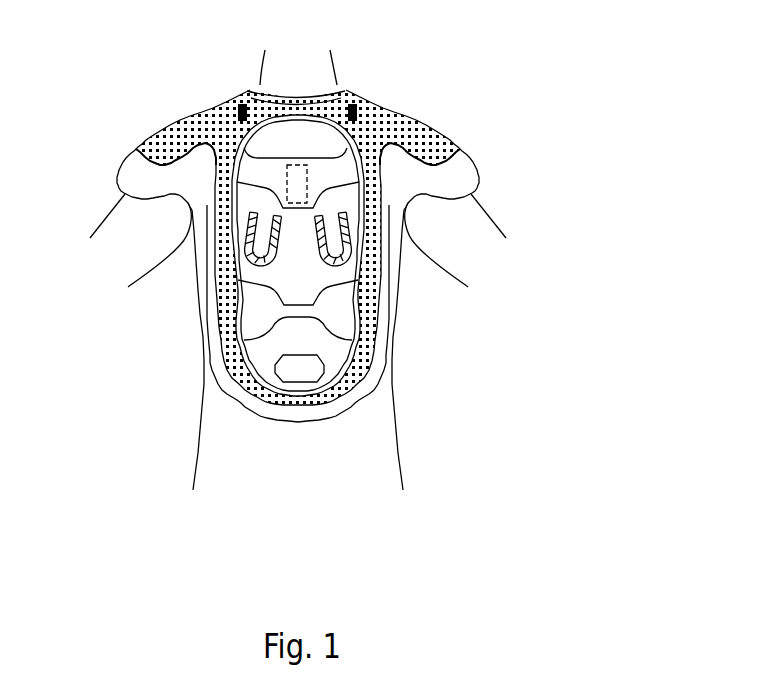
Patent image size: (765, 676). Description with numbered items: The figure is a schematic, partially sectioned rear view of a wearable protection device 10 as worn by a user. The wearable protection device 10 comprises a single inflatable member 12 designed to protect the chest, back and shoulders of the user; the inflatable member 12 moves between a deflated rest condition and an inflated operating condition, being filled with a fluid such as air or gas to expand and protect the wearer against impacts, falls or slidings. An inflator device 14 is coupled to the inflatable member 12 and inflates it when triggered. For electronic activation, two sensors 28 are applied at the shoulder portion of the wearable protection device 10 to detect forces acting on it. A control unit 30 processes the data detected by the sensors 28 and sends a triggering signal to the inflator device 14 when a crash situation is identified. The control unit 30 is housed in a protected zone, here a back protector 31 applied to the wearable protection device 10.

The wearable protection device 10 is at (592, 100).
The inflatable member 12 is at (134, 146).
The inflator device 14 is at (245, 257).
The sensor 28 is at (237, 110).
The control unit 30 is at (298, 165).
The back protector 31 is at (320, 343).